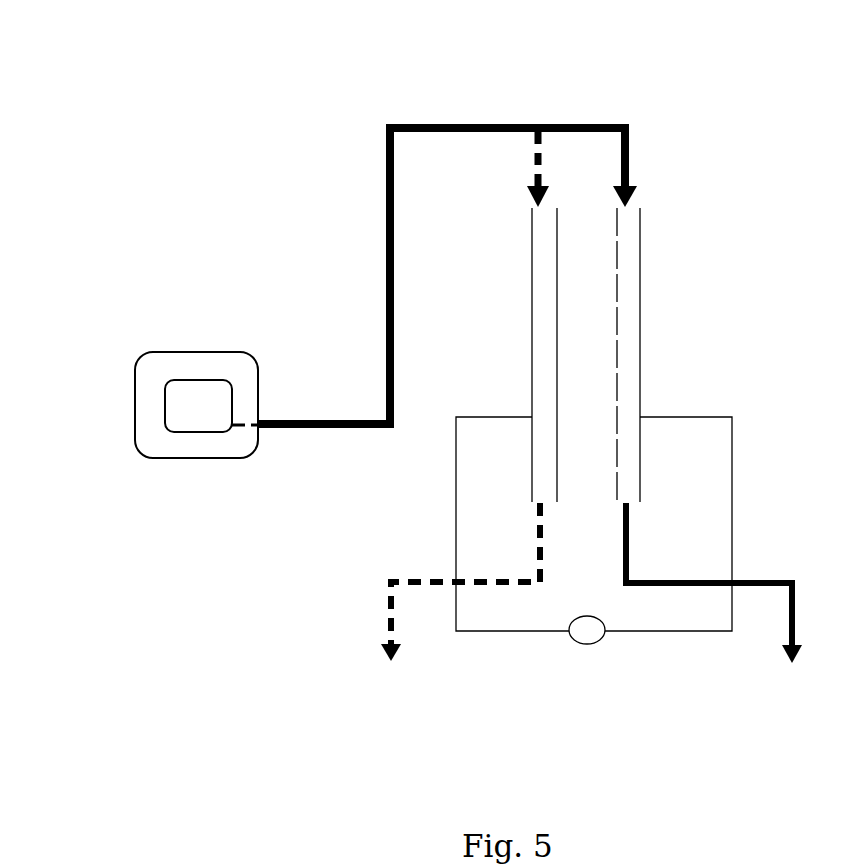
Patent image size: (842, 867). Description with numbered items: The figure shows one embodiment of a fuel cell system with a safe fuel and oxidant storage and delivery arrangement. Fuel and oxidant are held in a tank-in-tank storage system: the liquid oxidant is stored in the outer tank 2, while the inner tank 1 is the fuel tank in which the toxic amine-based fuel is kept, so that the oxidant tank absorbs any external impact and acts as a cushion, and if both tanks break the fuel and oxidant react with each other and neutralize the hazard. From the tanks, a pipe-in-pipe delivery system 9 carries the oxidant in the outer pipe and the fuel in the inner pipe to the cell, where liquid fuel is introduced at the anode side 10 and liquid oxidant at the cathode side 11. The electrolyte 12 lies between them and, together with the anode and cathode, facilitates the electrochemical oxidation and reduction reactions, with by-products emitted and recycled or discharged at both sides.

The inner tank 1 is at (198, 395).
The outer tank 2 is at (153, 428).
The pipe-in-pipe delivery system 9 is at (380, 158).
The anode side 10 is at (542, 252).
The cathode side 11 is at (623, 250).
The electrolyte 12 is at (580, 268).